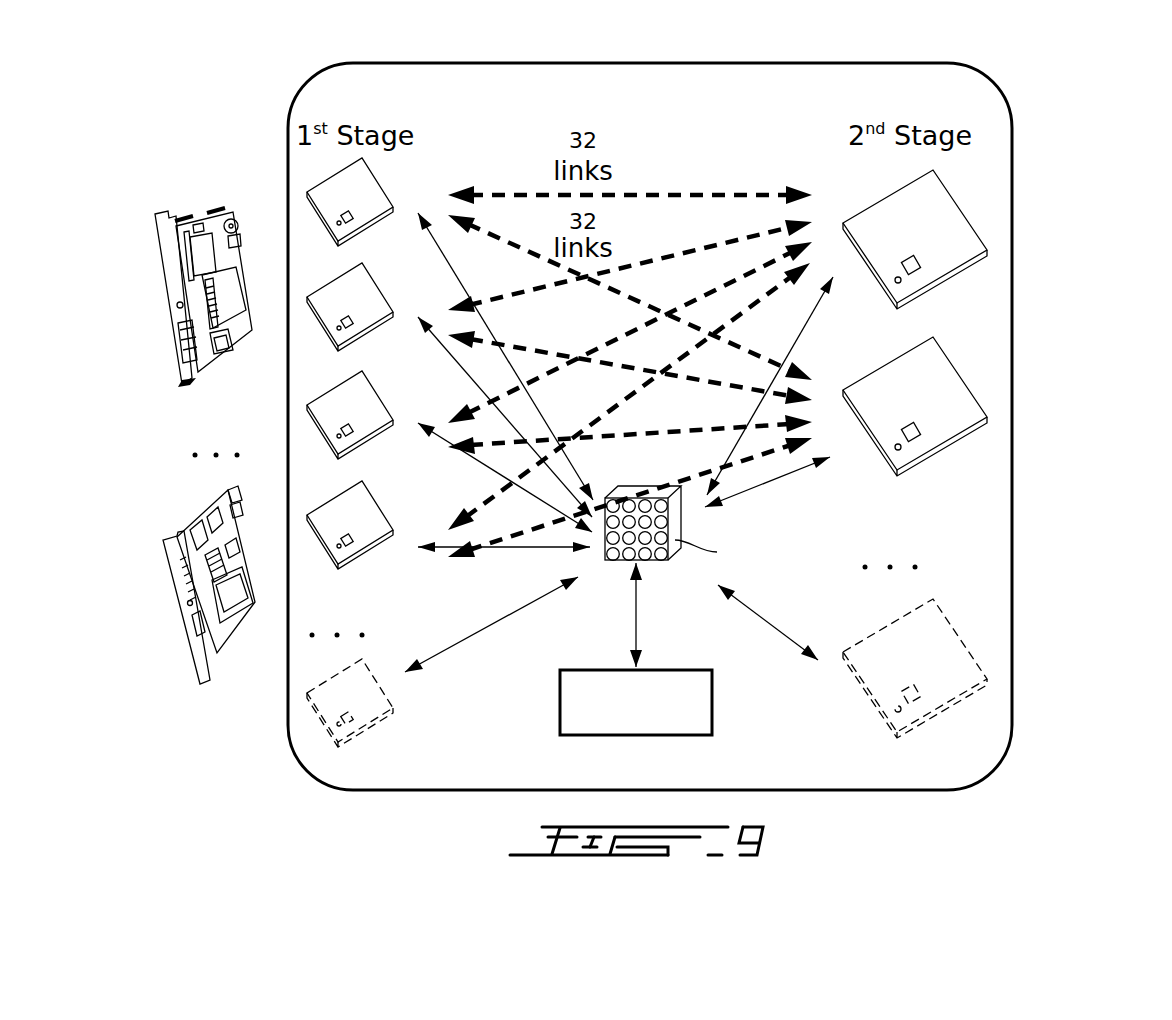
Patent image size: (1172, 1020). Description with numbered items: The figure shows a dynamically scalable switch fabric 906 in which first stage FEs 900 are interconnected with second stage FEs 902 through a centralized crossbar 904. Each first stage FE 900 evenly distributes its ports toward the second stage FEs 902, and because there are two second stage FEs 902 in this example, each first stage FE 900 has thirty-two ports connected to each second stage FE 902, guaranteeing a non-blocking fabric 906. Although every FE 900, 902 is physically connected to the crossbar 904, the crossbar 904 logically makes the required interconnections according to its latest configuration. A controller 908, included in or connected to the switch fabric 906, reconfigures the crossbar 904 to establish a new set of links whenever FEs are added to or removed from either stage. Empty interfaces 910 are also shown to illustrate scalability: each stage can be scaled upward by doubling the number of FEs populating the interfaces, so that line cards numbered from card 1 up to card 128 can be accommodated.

The first stage FE 900 is at (313, 200).
The second stage FE 902 is at (963, 207).
The crossbar 904 is at (675, 520).
The switch fabric 906 is at (1012, 462).
The controller 908 is at (712, 700).
The empty interface 910 is at (322, 710).
The line card 1 is at (208, 297).
The line card 128 is at (220, 585).